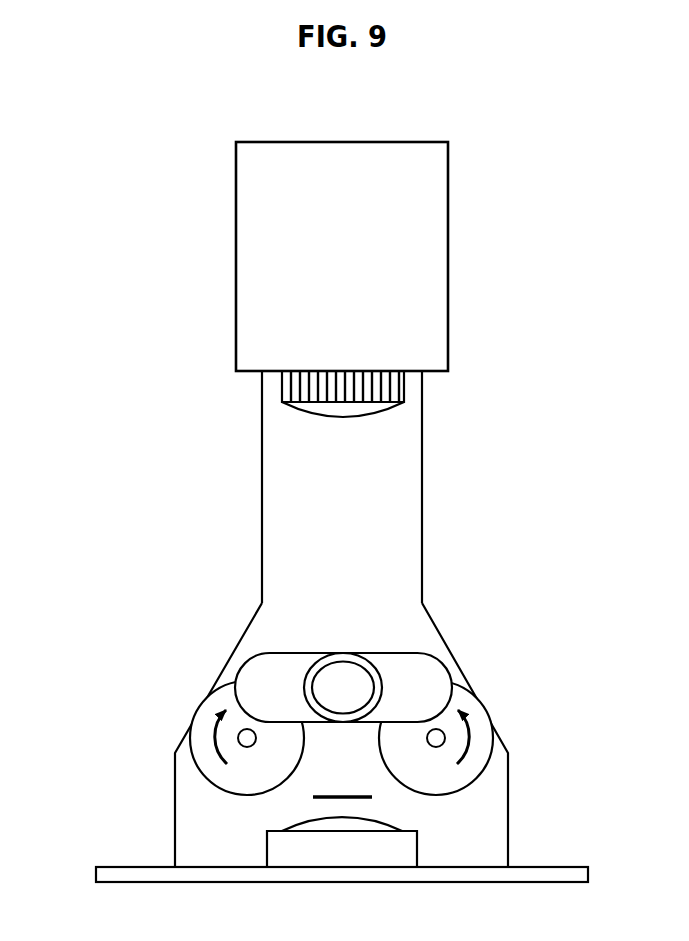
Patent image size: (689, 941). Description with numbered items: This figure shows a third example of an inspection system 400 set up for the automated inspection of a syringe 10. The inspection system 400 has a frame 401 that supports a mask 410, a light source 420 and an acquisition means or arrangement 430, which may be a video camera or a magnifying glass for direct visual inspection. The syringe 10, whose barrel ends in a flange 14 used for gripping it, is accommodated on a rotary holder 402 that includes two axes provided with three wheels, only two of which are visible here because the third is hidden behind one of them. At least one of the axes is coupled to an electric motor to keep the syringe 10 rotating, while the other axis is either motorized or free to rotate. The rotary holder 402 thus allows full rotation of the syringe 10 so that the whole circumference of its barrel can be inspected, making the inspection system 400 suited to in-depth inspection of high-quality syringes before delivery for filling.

The inspection system 400 is at (100, 330).
The acquisition means or arrangement 430 is at (488, 270).
The frame 401 is at (455, 487).
The rotary holder 402 is at (505, 710).
The syringe 10 is at (226, 635).
The flange 14 is at (232, 665).
The light source 420 is at (255, 850).
The mask 410 is at (381, 797).